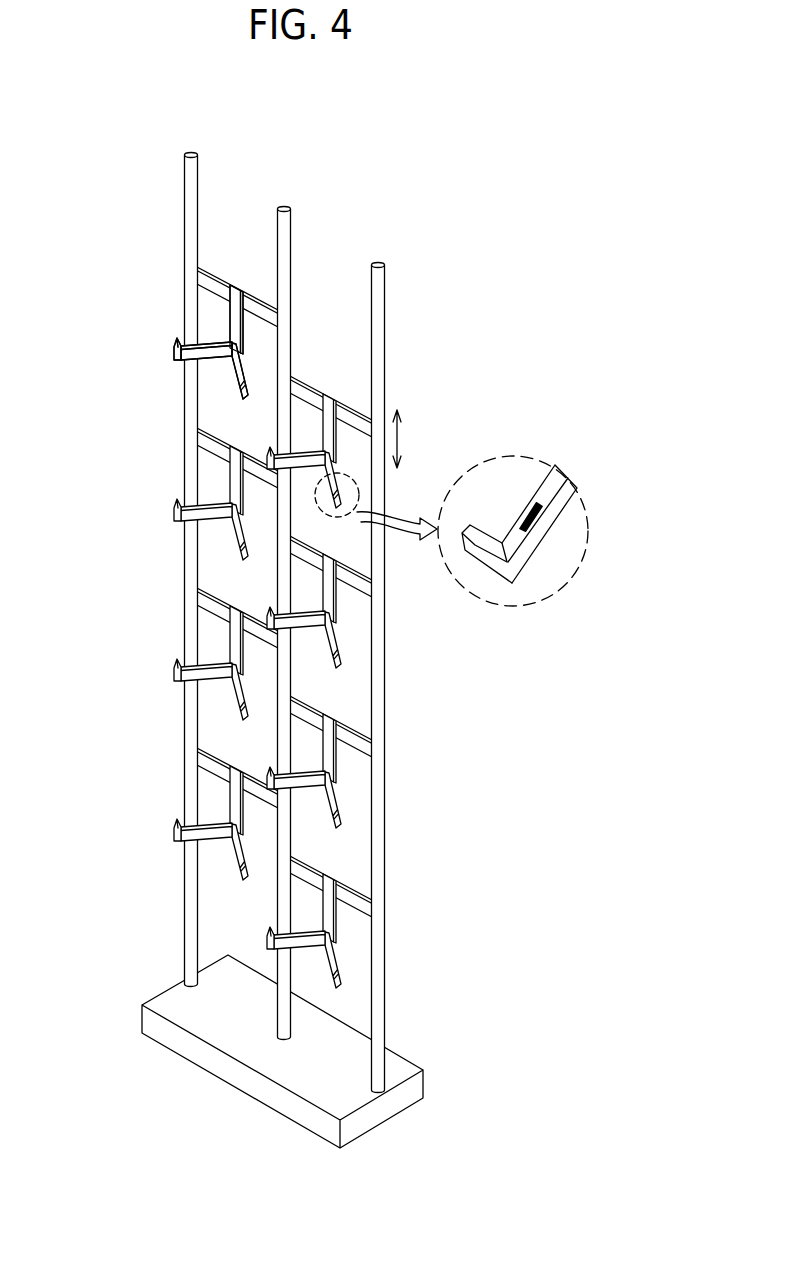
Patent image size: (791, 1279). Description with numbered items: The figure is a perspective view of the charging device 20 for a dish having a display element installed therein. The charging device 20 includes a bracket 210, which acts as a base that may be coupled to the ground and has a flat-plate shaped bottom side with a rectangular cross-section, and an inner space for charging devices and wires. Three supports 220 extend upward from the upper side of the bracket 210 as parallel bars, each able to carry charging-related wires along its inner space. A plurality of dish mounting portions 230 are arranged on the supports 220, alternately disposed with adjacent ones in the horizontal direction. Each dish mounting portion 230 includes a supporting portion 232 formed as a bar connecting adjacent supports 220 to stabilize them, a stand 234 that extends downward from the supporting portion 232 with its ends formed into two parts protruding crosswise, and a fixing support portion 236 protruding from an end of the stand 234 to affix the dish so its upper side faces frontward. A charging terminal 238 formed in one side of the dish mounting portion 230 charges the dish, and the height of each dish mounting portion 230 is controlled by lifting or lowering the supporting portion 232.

The charging device 20 is at (407, 331).
The bracket 210 is at (398, 1070).
The support 220 is at (377, 799).
The dish mounting portion 230 is at (90, 286).
The supporting portion 232 is at (235, 312).
The stand 234 is at (207, 346).
The fixing support portion 236 is at (177, 352).
The charging terminal 238 is at (532, 522).